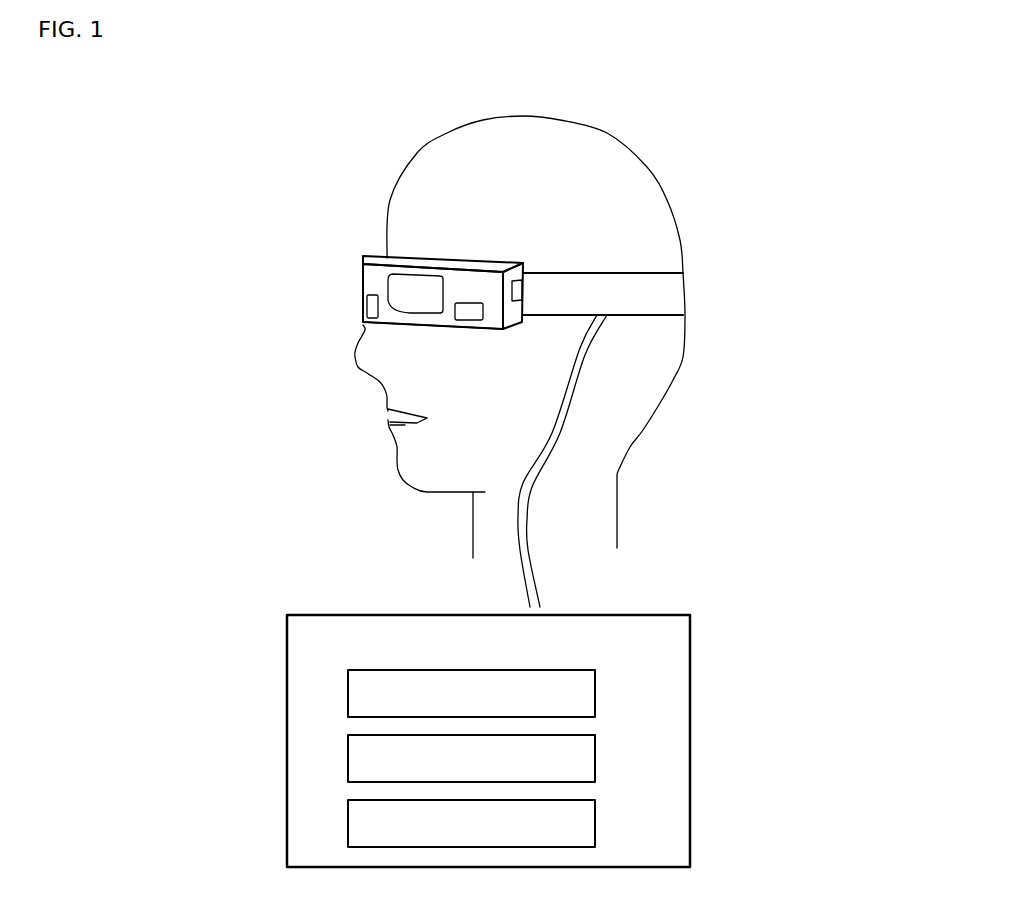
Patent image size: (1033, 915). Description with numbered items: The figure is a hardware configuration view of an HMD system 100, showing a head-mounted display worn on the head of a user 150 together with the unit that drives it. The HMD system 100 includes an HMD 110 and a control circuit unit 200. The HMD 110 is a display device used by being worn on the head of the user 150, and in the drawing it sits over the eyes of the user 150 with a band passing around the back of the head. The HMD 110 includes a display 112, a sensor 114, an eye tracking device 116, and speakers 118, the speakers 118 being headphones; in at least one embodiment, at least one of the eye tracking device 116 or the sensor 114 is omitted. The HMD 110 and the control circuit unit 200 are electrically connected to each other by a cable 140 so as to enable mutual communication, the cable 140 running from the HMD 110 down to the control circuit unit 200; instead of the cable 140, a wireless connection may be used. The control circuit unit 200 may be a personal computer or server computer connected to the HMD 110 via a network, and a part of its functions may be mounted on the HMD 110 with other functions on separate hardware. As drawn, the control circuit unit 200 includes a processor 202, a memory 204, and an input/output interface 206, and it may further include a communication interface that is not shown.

The HMD system 100 is at (287, 181).
The HMD 110 is at (363, 256).
The display 112 is at (363, 293).
The sensor 114 is at (467, 320).
The eye tracking device 116 is at (363, 321).
The speakers 118 is at (523, 263).
The cable 140 is at (553, 425).
The user 150 is at (682, 245).
The control circuit unit 200 is at (692, 655).
The processor 202 is at (595, 707).
The memory 204 is at (595, 765).
The input/output interface 206 is at (595, 827).